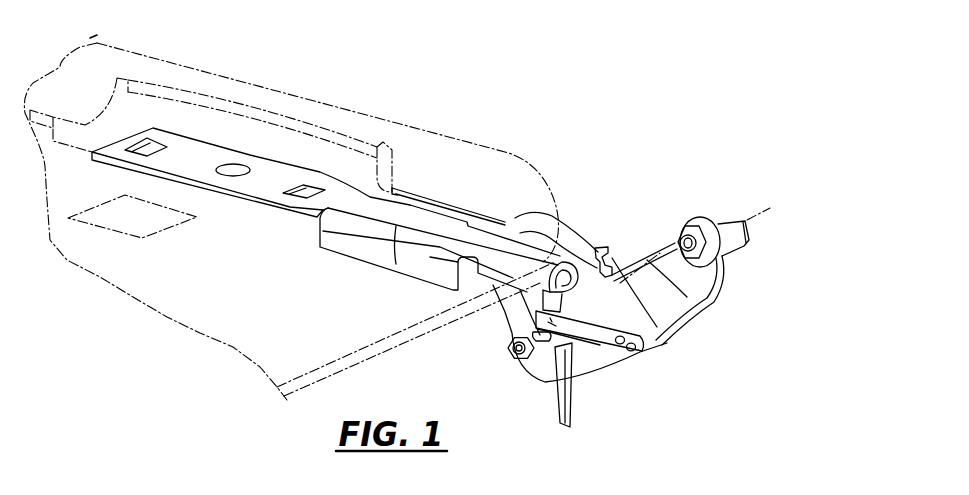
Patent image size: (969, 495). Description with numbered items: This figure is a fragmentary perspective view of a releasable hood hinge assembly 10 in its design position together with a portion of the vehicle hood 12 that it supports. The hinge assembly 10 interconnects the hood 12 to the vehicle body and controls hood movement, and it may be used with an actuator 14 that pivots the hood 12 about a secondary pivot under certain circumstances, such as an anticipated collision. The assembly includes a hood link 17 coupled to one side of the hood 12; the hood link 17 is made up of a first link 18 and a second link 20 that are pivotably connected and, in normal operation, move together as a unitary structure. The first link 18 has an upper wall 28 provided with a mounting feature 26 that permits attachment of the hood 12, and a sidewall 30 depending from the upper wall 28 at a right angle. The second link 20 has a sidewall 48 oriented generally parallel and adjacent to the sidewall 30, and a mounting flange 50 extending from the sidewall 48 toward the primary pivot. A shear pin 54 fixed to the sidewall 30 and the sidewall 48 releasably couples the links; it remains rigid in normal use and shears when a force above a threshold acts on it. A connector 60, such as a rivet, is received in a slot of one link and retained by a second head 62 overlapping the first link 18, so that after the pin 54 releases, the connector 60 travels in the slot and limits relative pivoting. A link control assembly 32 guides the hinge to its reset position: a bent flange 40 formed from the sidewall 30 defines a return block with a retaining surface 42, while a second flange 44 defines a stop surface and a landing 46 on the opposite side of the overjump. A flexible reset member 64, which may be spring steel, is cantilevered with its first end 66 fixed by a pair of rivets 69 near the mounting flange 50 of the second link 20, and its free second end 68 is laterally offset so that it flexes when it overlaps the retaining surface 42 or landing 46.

The hood hinge assembly 10 is at (565, 103).
The vehicle hood 12 is at (107, 50).
The actuator 14 is at (176, 222).
The hood link 17 is at (320, 278).
The first link 18 is at (267, 208).
The second link 20 is at (461, 211).
The mounting feature 26 is at (165, 147).
The upper wall 28 is at (288, 178).
The sidewall 30 is at (505, 316).
The link control assembly 32 is at (548, 350).
The bent flange 40 is at (597, 248).
The retaining surface 42 is at (566, 297).
The second flange 44 is at (569, 385).
The landing 46 is at (560, 402).
The sidewall 48 is at (596, 367).
The mounting flange 50 is at (712, 296).
The shear pin 54 is at (512, 358).
The connector 60 is at (519, 362).
The second head 62 is at (538, 334).
The reset member 64 is at (607, 356).
The first end 66 is at (643, 341).
The second end 68 is at (543, 302).
The rivets 69 is at (633, 352).